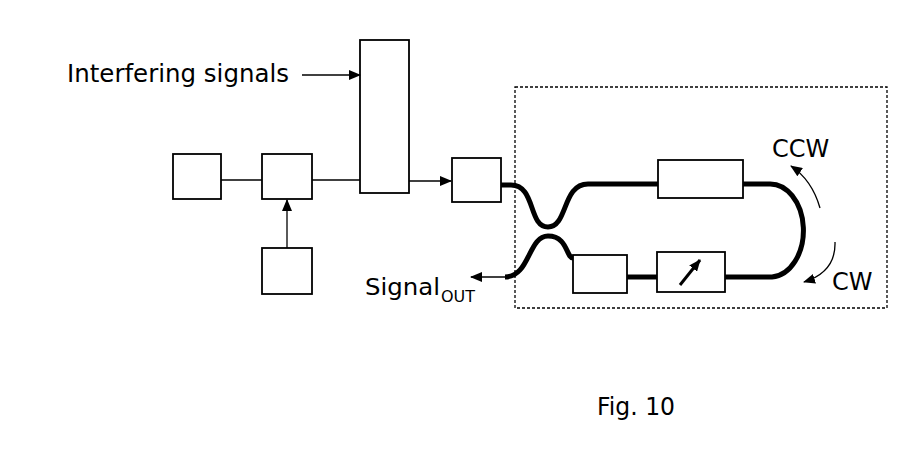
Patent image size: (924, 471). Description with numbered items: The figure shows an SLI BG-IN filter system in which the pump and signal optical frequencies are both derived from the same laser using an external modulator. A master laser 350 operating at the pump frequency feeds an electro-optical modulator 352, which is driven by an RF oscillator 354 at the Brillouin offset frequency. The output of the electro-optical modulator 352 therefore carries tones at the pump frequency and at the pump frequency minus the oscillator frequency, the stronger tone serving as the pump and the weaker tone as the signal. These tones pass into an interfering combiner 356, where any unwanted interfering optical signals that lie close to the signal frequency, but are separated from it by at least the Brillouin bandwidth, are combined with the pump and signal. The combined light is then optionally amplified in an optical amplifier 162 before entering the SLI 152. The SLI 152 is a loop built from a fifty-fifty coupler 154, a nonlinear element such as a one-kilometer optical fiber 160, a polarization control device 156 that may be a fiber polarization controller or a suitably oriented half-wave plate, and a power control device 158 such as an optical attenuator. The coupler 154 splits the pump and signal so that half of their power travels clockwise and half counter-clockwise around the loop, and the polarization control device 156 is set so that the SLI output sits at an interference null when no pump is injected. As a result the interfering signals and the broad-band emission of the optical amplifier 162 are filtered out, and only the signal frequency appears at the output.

The master laser 350 is at (197, 161).
The electro-optical modulator 352 is at (287, 161).
The RF oscillator 354 is at (287, 267).
The interfering combiner 356 is at (384, 103).
The optical amplifier 162 is at (476, 198).
The SLI 152 is at (701, 181).
The 50/50 coupler 154 is at (579, 216).
The polarization control device 156 is at (601, 261).
The power control device 158 is at (691, 259).
The optical fiber 160 is at (700, 167).